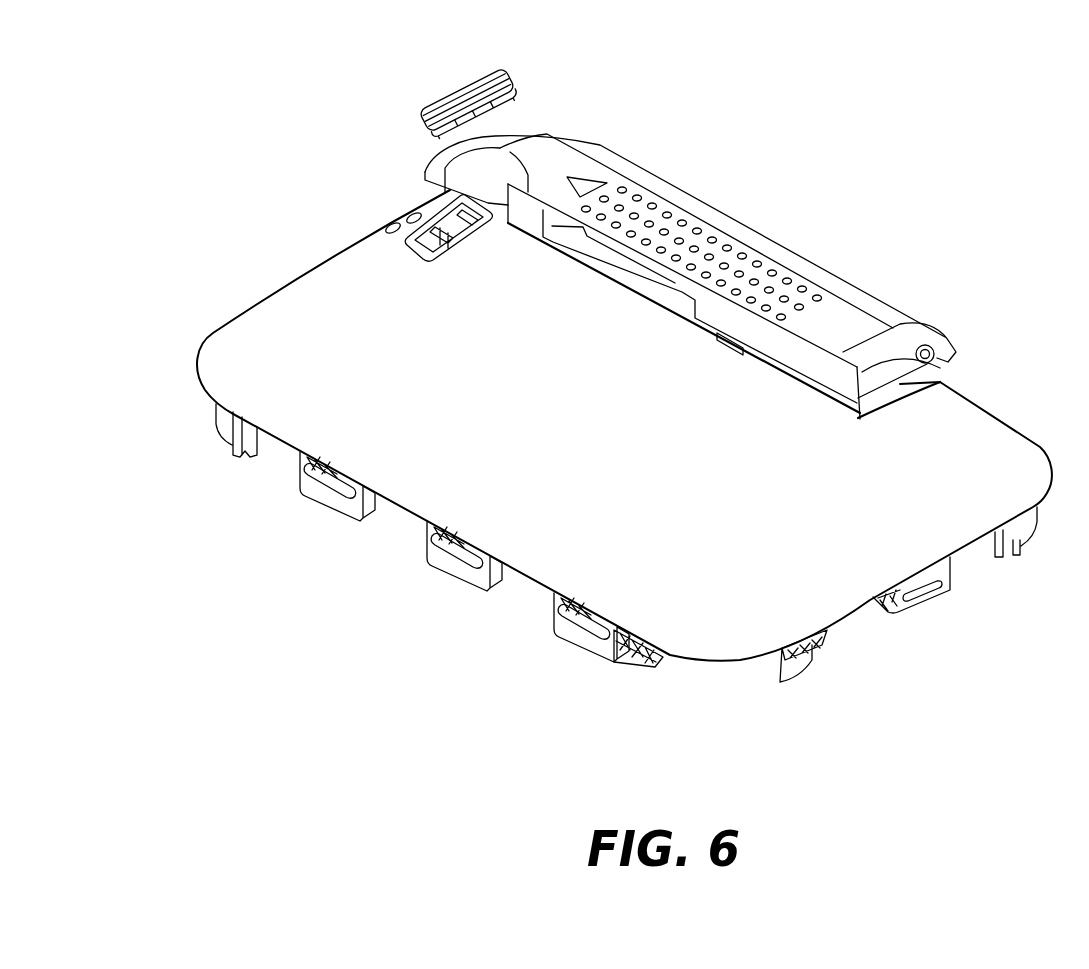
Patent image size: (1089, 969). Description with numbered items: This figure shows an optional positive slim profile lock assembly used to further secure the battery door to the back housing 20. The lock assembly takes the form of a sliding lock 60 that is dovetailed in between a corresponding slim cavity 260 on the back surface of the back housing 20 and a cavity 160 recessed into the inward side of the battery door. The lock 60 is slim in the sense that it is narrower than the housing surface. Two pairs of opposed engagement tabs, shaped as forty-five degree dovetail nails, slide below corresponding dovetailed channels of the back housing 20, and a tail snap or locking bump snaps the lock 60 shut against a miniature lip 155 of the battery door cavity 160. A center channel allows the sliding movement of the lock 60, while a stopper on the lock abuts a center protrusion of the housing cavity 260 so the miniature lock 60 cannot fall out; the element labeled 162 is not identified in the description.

The back housing 20 is at (318, 383).
The sliding lock 60 is at (447, 90).
The miniature lip 155 is at (497, 187).
The battery door cavity 160 is at (437, 183).
The connector opening 162 is at (600, 262).
The slim cavity 260 is at (390, 222).